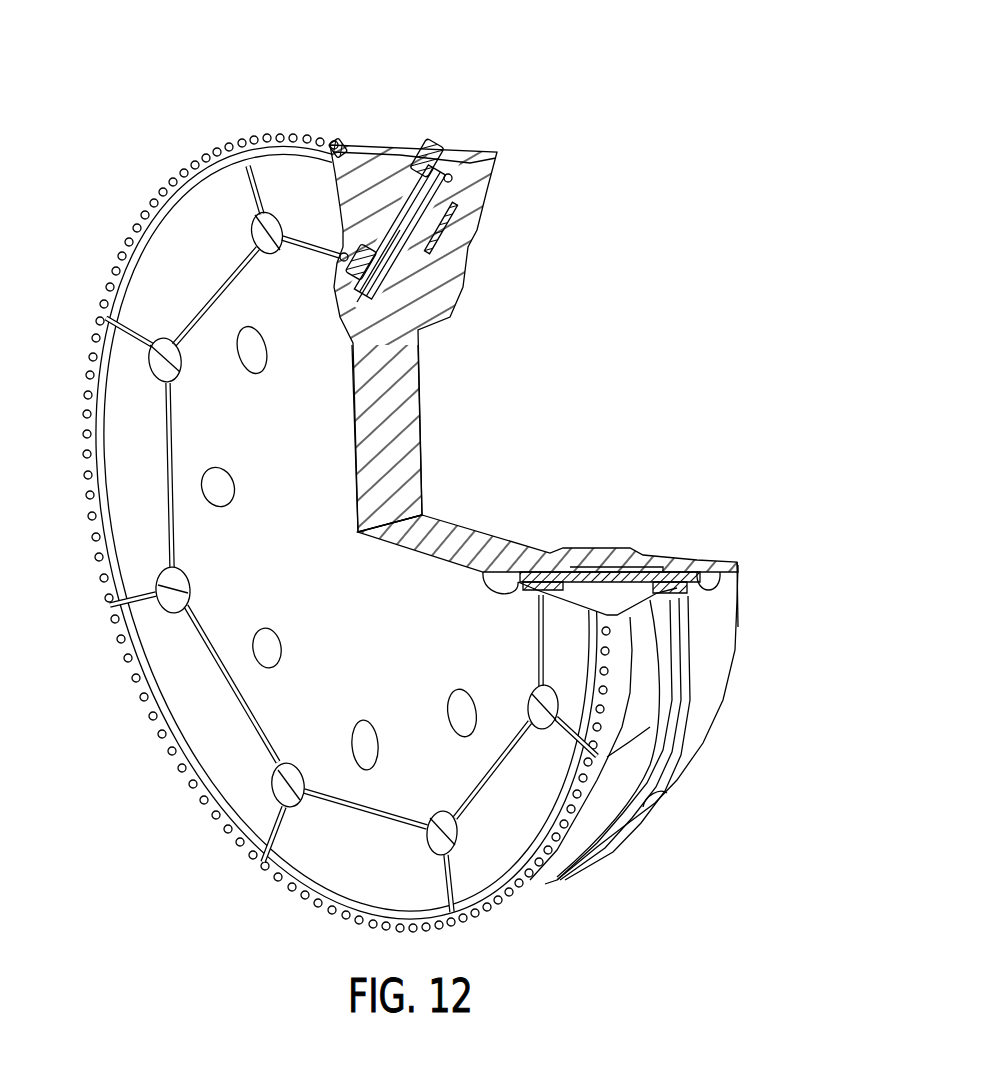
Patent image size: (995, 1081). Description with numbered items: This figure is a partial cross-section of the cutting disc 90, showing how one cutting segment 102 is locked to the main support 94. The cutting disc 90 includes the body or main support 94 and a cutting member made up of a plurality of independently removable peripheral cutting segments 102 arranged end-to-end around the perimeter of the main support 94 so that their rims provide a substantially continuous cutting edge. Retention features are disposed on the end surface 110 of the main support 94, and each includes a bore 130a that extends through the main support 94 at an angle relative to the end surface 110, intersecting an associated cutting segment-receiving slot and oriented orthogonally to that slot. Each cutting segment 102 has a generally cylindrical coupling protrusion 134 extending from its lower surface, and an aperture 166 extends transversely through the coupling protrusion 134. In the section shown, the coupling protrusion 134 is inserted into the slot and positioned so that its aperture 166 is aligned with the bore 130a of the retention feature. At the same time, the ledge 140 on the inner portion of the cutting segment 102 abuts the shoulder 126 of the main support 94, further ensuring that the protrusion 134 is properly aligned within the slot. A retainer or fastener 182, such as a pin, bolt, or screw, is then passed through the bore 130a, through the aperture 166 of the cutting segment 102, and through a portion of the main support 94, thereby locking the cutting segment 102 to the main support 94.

The cutting disc 90 is at (602, 78).
The main support 94 is at (530, 526).
The cutting segment 102 is at (137, 158).
The end surface 110 is at (343, 457).
The shoulder 126 is at (345, 258).
The bore 130a is at (452, 179).
The coupling protrusion 134 is at (440, 224).
The ledge 140 is at (312, 238).
The aperture 166 is at (414, 200).
The fastener 182 is at (375, 282).